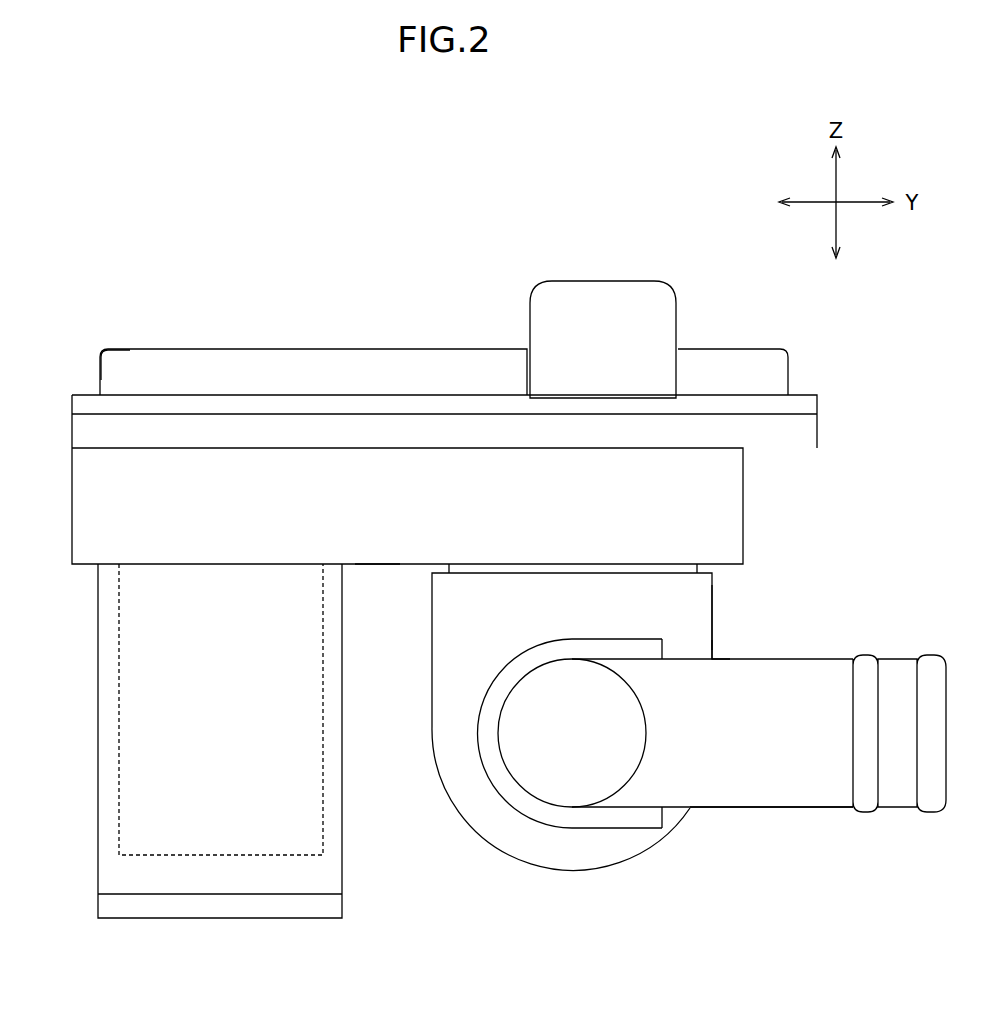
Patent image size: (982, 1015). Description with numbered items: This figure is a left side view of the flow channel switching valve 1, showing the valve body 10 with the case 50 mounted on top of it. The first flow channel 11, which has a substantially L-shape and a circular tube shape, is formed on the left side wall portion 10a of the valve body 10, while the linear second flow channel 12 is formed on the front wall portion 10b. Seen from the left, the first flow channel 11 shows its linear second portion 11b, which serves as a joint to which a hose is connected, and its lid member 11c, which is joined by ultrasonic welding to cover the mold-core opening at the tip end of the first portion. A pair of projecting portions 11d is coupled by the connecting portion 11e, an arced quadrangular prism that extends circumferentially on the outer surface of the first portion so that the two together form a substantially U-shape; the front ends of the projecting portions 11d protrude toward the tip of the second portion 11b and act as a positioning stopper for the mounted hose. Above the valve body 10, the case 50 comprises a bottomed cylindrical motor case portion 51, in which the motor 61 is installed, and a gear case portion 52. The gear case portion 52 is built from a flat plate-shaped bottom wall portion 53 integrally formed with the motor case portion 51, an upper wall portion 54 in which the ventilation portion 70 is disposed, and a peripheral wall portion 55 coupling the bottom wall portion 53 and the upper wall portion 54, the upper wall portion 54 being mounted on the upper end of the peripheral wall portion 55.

The flow channel switching valve 1 is at (130, 188).
The valve body 10 is at (687, 577).
The left side wall portion 10a is at (696, 607).
The front wall portion 10b is at (715, 645).
The first flow channel 11 is at (823, 812).
The second portion 11b is at (733, 795).
The lid member 11c is at (545, 770).
The pair of projecting portions 11d is at (627, 652).
The connecting portion 11e is at (488, 730).
The second flow channel 12 is at (905, 812).
The case 50 is at (362, 347).
The motor case portion 51 is at (345, 850).
The gear case portion 52 is at (117, 345).
The bottom wall portion 53 is at (370, 566).
The upper wall portion 54 is at (163, 353).
The peripheral wall portion 55 is at (73, 509).
The motor 61 is at (208, 862).
The ventilation portion 70 is at (583, 279).